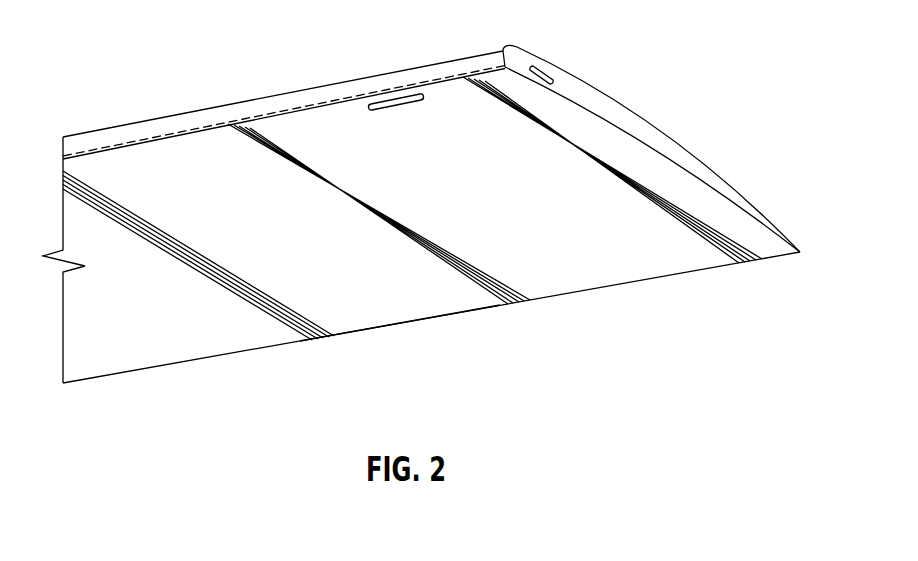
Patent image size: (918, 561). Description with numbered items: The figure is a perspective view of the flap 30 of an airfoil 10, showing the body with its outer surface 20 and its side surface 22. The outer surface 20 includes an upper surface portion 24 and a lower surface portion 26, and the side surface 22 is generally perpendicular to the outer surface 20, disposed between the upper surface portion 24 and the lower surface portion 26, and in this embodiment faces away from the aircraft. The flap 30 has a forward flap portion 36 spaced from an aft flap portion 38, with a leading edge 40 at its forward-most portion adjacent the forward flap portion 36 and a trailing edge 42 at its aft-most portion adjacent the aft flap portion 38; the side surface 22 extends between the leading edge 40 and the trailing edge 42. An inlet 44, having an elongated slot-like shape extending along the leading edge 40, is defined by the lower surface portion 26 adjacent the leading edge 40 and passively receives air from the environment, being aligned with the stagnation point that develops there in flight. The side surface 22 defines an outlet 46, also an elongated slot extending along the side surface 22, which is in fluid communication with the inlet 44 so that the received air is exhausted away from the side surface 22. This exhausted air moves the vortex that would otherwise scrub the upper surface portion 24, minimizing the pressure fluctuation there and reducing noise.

The airfoil 10 is at (181, 55).
The outer surface 20 is at (558, 273).
The side surface 22 is at (601, 98).
The upper surface portion 24 is at (728, 183).
The lower surface portion 26 is at (607, 268).
The flap 30 is at (161, 98).
The forward flap portion 36 is at (297, 91).
The aft flap portion 38 is at (431, 319).
The leading edge 40 is at (303, 90).
The trailing edge 42 is at (427, 323).
The inlet 44 is at (396, 109).
The outlet 46 is at (549, 73).